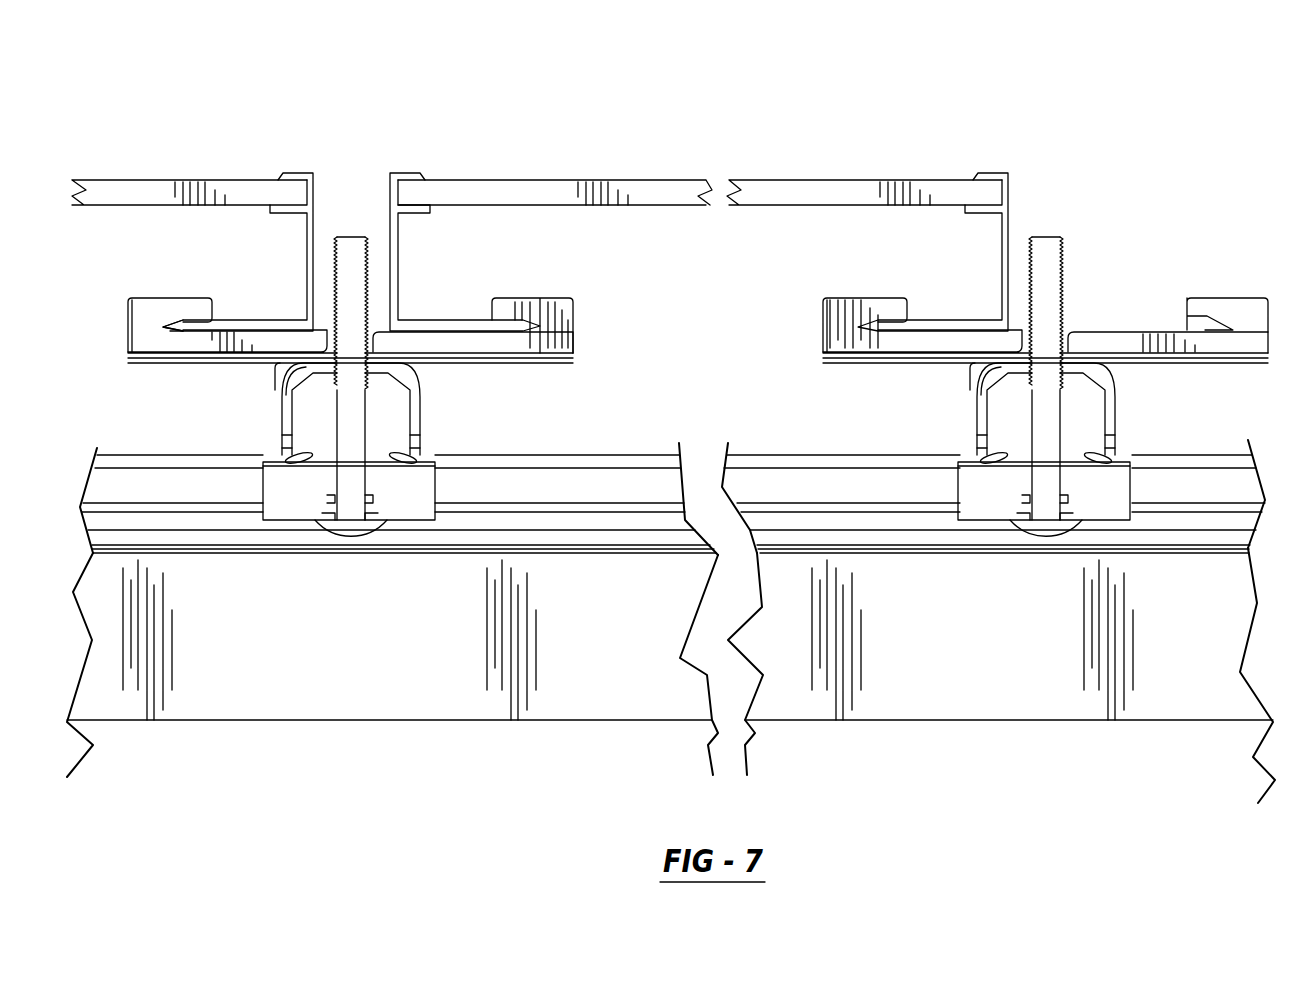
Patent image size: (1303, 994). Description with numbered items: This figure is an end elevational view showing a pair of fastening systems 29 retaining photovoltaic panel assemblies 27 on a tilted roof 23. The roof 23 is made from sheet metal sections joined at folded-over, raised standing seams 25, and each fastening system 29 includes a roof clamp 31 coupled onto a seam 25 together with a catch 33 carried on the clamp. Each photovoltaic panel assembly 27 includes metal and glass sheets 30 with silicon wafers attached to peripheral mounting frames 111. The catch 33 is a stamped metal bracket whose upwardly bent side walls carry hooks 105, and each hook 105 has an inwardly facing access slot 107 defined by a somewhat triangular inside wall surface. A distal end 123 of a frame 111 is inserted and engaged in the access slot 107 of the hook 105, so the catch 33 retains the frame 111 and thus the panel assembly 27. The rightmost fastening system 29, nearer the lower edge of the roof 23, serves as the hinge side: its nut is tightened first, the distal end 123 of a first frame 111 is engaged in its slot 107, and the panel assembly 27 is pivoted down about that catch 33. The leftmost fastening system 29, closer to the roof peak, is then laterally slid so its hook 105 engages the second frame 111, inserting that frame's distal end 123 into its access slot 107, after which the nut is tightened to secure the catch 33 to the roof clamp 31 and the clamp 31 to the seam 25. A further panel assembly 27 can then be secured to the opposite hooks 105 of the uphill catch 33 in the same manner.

The tilted roof 23 is at (973, 720).
The standing seam 25 is at (592, 485).
The photovoltaic panel assembly 27 is at (954, 168).
The fastening system 29 is at (454, 421).
The metal and glass sheet 30 is at (160, 192).
The roof clamp 31 is at (278, 490).
The catch 33 is at (573, 330).
The hook 105 is at (197, 307).
The access slot 107 is at (175, 332).
The mounting frame 111 is at (305, 279).
The distal end 123 is at (172, 323).